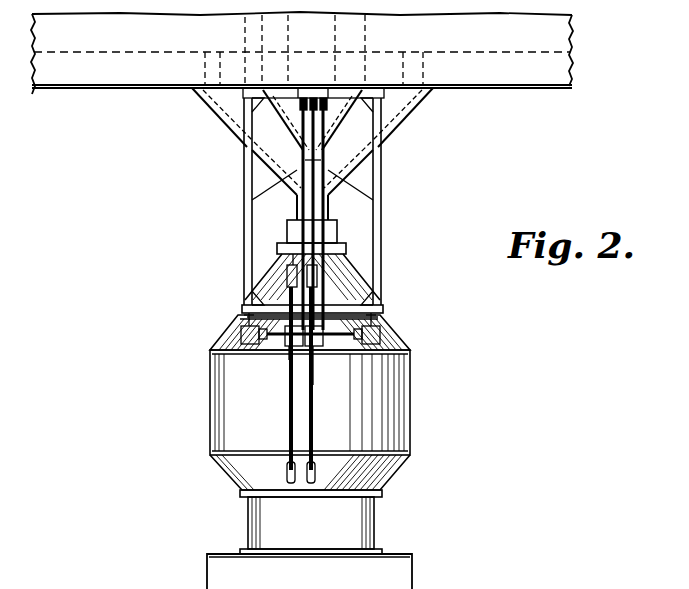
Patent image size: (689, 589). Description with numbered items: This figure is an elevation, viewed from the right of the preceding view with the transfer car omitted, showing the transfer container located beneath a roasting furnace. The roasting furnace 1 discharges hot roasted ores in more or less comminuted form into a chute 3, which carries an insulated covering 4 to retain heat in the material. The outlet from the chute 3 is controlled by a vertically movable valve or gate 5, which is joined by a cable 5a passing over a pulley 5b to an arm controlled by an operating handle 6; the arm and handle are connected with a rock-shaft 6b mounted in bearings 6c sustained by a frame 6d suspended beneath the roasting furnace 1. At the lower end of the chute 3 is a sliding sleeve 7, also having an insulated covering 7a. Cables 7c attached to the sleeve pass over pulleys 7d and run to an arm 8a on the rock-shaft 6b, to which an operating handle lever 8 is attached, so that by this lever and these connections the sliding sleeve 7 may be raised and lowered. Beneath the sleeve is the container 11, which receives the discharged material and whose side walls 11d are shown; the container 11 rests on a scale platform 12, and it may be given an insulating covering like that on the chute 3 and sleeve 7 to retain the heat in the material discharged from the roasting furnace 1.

The roasting furnace 1 is at (560, 46).
The chute 3 is at (350, 150).
The insulated covering 4 is at (412, 110).
The vertically movable valve or gate 5 is at (345, 255).
The cable 5a is at (330, 187).
The pulley 5b is at (313, 98).
The operating handle 6 is at (312, 385).
The rock-shaft 6b is at (245, 318).
The bearings 6c is at (243, 331).
The frame 6d is at (381, 277).
The sliding sleeve 7 is at (290, 227).
The insulated covering 7a is at (280, 248).
The cables 7c is at (300, 172).
The pulleys 7d is at (300, 98).
The operating handle lever 8 is at (287, 427).
The arm 8a is at (313, 350).
The container 11 is at (398, 420).
The side walls 11d is at (256, 527).
The scale platform 12 is at (380, 553).